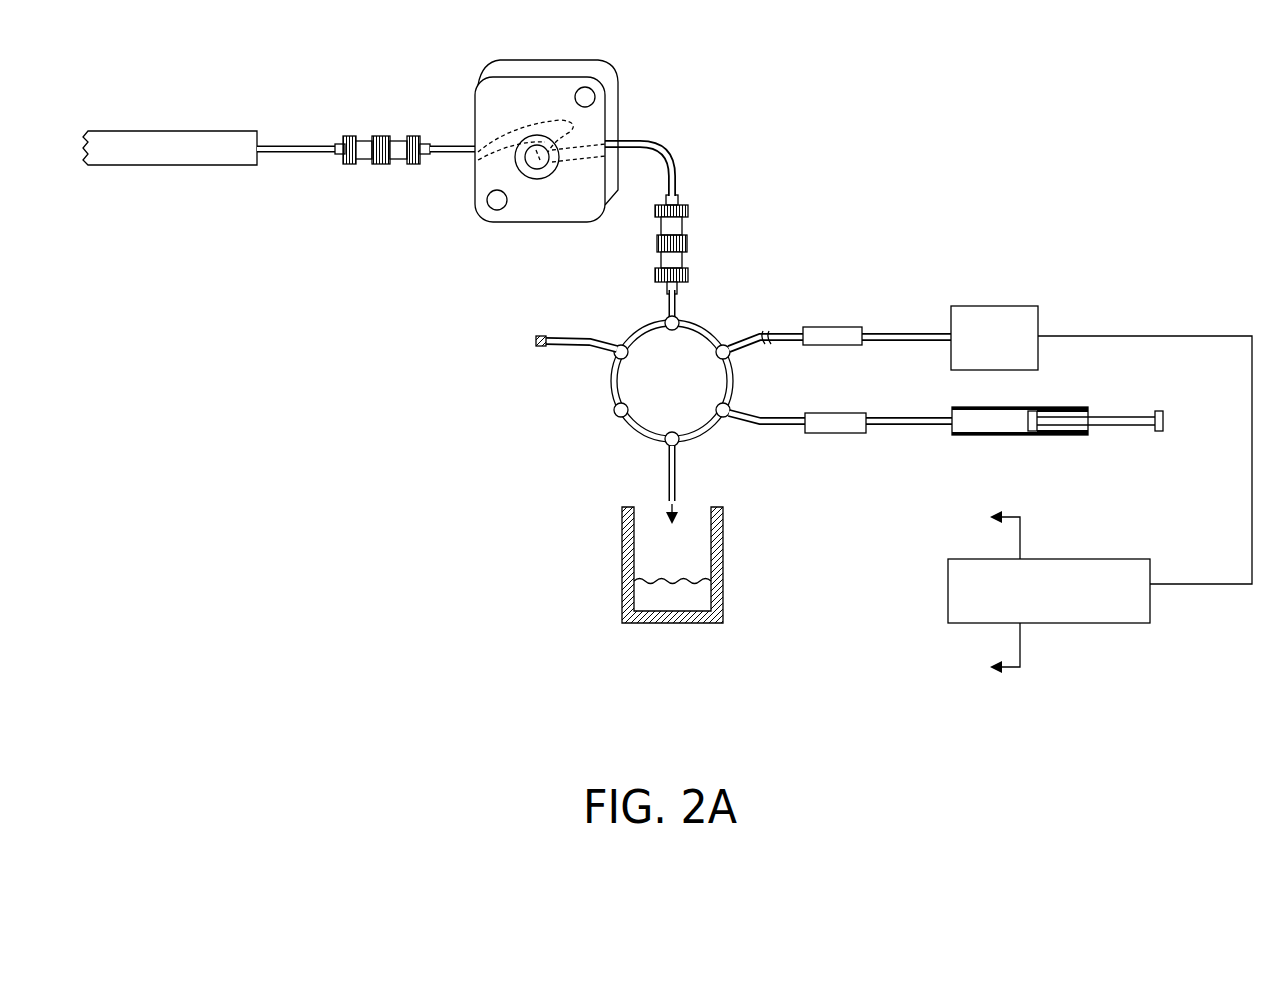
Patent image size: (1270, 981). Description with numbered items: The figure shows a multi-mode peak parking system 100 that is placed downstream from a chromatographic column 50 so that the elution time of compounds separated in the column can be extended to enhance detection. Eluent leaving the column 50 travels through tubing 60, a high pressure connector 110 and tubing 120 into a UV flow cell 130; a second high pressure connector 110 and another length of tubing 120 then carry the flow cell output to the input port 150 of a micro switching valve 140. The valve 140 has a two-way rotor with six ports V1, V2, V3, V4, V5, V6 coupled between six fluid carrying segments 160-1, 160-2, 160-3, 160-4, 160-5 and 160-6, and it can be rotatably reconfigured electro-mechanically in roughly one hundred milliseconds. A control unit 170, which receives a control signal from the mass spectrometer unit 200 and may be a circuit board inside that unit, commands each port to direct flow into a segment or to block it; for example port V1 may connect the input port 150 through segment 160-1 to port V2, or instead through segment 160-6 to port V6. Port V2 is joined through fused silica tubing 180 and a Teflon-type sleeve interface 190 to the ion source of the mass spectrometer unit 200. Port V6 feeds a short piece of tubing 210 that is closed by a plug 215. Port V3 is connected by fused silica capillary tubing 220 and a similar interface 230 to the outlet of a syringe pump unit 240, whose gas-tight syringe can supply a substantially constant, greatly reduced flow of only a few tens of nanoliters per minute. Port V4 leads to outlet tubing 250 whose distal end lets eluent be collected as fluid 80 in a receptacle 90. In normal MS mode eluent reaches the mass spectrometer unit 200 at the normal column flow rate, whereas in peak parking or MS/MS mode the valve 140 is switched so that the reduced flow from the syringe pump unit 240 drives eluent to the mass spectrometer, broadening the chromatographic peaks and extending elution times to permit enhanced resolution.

The column 50 is at (118, 130).
The tubing 60 is at (262, 142).
The fluid 80 is at (667, 593).
The receptacle 90 is at (622, 565).
The multi-mode system 100 is at (924, 114).
The high pressure connector 110 is at (370, 172).
The tubing 120 is at (455, 137).
The UV flow cell 130 is at (616, 90).
The micro switching valve 140 is at (494, 395).
The input port 150 is at (665, 318).
The fluid carrying segment 160-1 is at (715, 332).
The fluid carrying segment 160-2 is at (740, 386).
The fluid carrying segment 160-3 is at (720, 446).
The fluid carrying segment 160-4 is at (630, 432).
The fluid carrying segment 160-5 is at (615, 388).
The fluid carrying segment 160-6 is at (630, 336).
The control unit 170 is at (958, 608).
The tubing 180 is at (928, 330).
The interface 190 is at (822, 325).
The mass spectrometer unit 200 is at (1013, 305).
The tubing 210 is at (573, 335).
The plug 215 is at (534, 338).
The capillary tubing 220 is at (884, 414).
The interface 230 is at (822, 435).
The syringe pump unit 240 is at (1013, 407).
The outlet tubing 250 is at (678, 476).
The port V1 is at (686, 315).
The port V2 is at (717, 362).
The port V3 is at (723, 432).
The port V4 is at (683, 427).
The port V5 is at (617, 421).
The port V6 is at (612, 357).